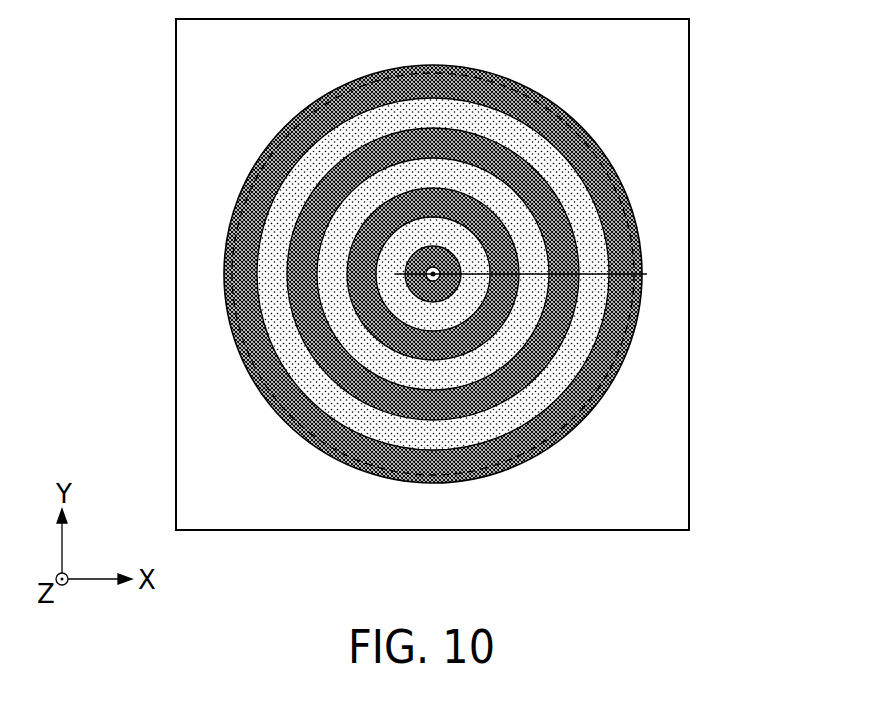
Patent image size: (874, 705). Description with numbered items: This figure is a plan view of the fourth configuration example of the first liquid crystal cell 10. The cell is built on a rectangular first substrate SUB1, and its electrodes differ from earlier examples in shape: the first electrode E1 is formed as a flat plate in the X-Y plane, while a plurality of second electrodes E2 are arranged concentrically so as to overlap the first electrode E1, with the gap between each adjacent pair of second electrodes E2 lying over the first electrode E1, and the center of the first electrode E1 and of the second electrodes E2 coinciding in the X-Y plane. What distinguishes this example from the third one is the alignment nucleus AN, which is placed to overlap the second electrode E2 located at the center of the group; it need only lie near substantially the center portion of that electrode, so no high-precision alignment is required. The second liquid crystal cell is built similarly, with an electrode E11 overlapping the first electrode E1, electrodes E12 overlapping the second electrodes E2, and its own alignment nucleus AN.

The first liquid crystal cell 10 is at (498, 318).
The first substrate SUB1 is at (689, 478).
The first electrode E1 is at (522, 274).
The electrode E11 is at (633, 332).
The second electrodes E2 is at (477, 230).
The electrodes E12 is at (450, 242).
The alignment nucleus AN is at (433, 281).